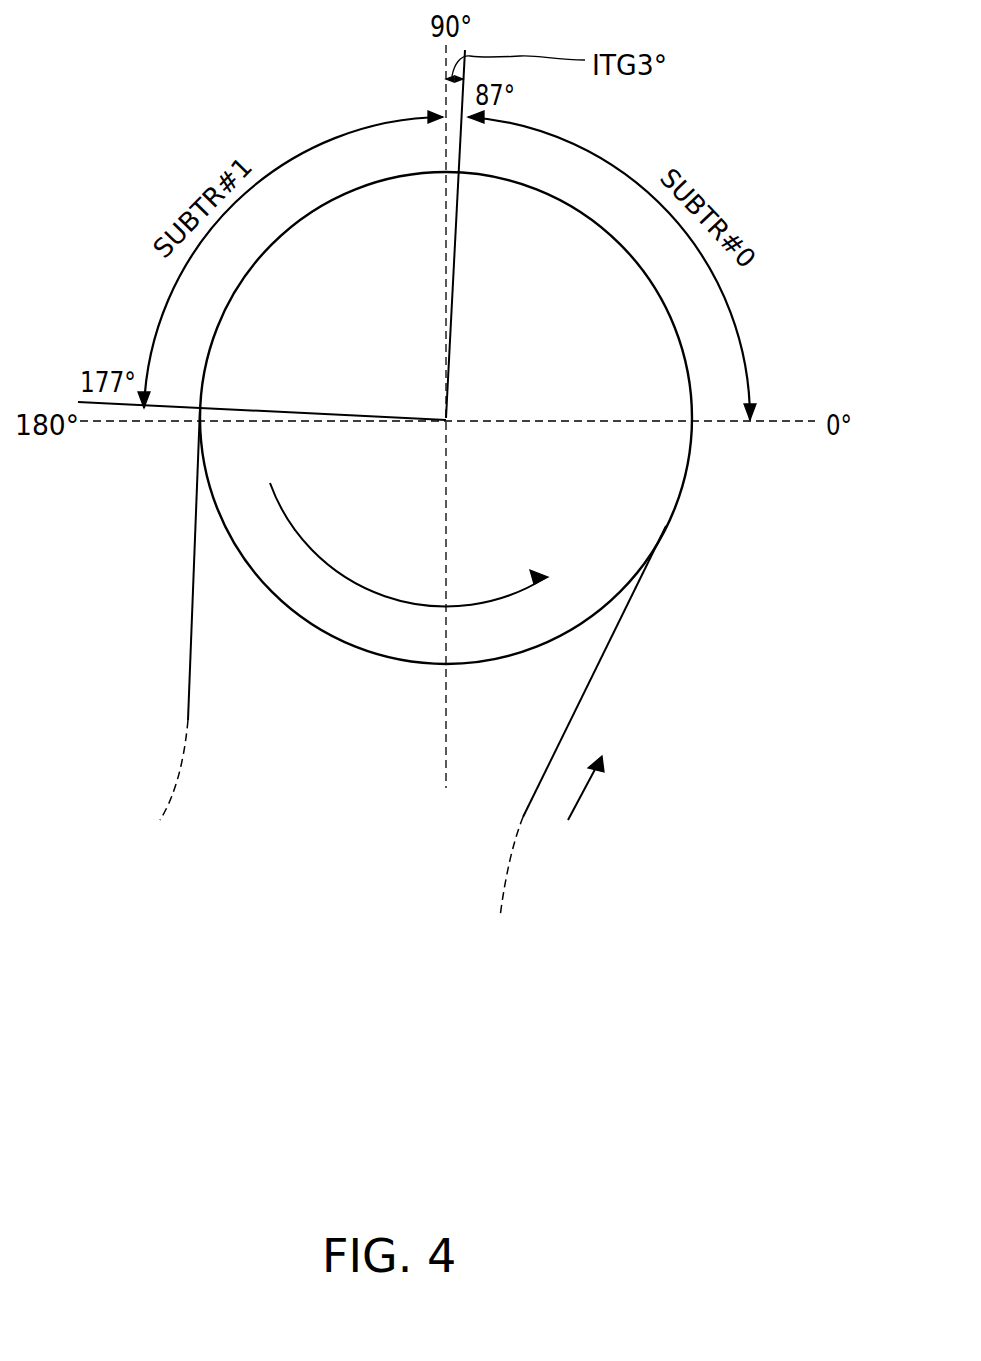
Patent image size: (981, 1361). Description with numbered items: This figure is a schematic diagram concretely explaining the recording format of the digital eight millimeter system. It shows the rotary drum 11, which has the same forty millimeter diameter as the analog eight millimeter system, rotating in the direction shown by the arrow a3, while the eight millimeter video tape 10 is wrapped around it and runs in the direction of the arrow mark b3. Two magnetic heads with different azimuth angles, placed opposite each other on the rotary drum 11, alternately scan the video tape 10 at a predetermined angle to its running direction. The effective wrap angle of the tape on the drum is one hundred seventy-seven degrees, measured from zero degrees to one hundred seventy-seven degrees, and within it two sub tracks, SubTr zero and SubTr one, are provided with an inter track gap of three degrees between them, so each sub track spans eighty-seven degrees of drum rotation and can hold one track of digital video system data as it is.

The 8 mm video tape 10 is at (600, 665).
The rotary drum 11 is at (491, 664).
The arrow a3 is at (325, 566).
The arrow mark b3 is at (585, 790).